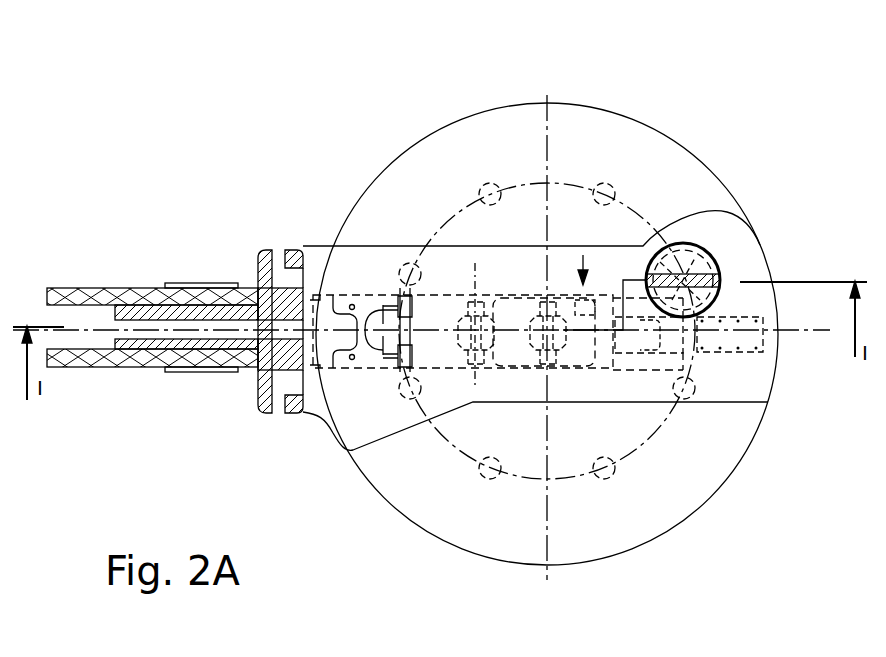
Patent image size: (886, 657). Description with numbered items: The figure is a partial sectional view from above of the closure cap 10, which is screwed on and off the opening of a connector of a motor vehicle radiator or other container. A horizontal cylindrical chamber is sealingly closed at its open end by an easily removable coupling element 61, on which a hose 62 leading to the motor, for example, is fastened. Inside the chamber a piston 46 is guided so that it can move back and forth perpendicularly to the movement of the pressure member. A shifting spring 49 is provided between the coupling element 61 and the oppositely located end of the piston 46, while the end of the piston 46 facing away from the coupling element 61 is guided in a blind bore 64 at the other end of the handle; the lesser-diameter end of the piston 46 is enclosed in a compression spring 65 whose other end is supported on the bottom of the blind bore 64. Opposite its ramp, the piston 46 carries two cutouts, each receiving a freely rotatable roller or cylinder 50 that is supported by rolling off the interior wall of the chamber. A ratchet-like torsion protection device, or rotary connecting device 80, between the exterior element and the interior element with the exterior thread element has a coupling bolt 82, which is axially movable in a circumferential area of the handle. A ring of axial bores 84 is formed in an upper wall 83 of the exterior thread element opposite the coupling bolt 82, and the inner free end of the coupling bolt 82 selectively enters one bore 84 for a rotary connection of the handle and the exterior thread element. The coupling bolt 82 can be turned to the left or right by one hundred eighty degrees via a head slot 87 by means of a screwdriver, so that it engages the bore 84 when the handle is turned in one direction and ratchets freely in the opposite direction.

The closure cap 10 is at (333, 130).
The piston 46 is at (378, 352).
The shifting spring 49 is at (397, 370).
The cylinder 50 is at (532, 352).
The coupling element 61 is at (260, 250).
The hose 62 is at (80, 287).
The blind bore 64 is at (752, 353).
The compression spring 65 is at (720, 353).
The rotary connecting device 80 is at (704, 240).
The coupling bolt 82 is at (642, 298).
The upper wall 83 is at (631, 186).
The axial bores 84 is at (596, 183).
The head slot 87 is at (720, 275).